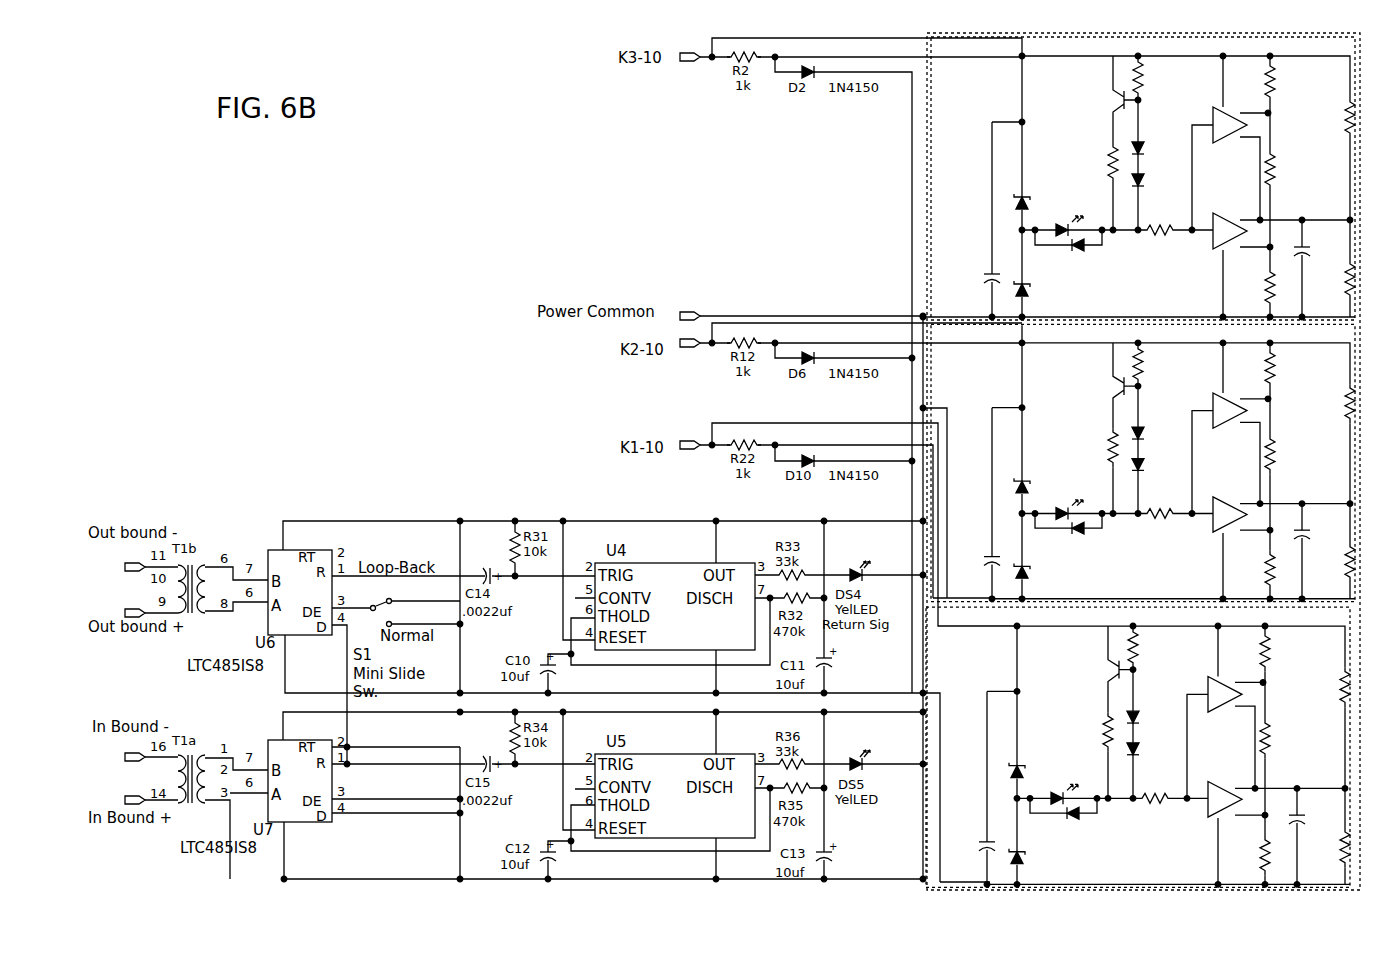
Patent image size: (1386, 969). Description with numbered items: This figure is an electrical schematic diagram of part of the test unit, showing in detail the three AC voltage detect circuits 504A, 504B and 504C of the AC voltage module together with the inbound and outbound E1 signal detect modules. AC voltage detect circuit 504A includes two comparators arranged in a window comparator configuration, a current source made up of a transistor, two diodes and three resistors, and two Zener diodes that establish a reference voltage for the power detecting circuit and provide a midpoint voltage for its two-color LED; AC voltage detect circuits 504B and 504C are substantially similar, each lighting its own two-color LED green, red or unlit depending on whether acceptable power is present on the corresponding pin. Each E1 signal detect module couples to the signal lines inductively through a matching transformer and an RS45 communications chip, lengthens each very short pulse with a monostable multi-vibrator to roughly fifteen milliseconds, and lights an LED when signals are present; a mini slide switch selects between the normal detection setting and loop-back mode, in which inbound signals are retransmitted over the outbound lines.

The AC voltage detect circuit 504A is at (929, 87).
The AC voltage detect circuit 504B is at (1142, 462).
The AC voltage detect circuit 504C is at (1137, 747).